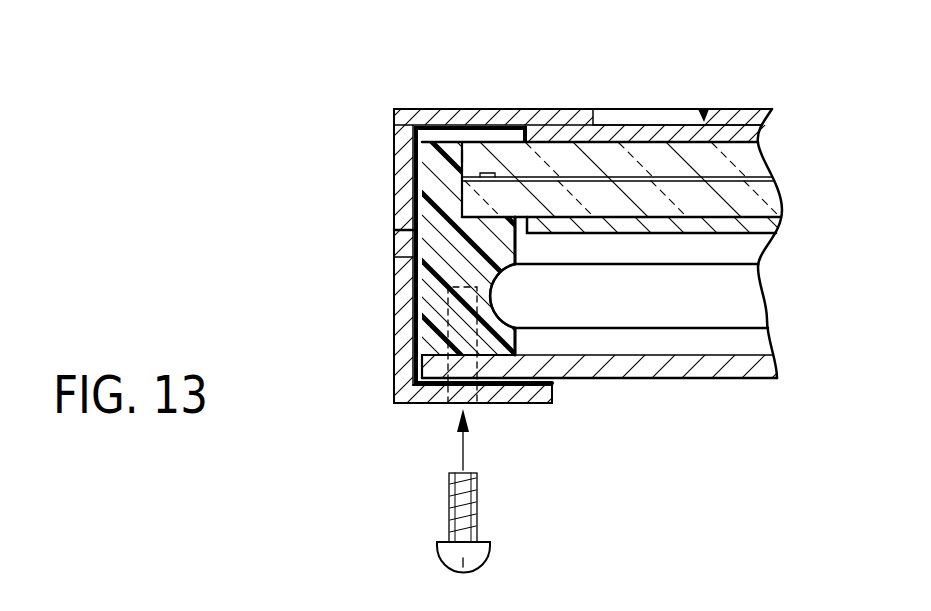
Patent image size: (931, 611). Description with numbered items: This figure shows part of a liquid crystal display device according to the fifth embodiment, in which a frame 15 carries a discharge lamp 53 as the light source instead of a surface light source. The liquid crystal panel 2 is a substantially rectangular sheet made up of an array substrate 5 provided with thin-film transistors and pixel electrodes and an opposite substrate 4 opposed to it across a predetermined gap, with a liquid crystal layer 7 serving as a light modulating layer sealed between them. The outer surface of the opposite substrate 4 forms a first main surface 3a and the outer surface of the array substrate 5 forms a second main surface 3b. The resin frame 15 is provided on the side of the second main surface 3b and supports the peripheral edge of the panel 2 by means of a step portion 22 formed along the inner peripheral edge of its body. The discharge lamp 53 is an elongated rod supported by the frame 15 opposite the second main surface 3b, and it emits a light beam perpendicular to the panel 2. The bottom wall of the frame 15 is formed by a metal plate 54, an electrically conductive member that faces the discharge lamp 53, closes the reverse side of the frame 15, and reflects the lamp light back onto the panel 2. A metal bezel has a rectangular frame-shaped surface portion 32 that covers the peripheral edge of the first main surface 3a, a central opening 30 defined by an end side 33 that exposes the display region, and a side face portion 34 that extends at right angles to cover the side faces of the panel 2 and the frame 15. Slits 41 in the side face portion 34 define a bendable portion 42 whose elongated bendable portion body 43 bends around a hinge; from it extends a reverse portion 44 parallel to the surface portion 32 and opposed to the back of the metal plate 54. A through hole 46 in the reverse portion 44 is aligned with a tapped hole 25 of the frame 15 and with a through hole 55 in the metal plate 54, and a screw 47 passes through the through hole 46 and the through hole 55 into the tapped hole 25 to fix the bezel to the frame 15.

The liquid crystal panel 2 is at (704, 108).
The first main surface 3a is at (744, 108).
The second main surface 3b is at (738, 233).
The opposite substrate 4 is at (756, 152).
The array substrate 5 is at (770, 206).
The liquid crystal layer 7 is at (752, 171).
The frame 15 is at (443, 124).
The step portion 22 is at (466, 157).
The tapped hole 25 is at (433, 341).
The opening 30 is at (650, 108).
The surface portion 32 is at (419, 108).
The end side 33 is at (593, 108).
The side face portion 34 is at (394, 162).
The slit 41 is at (394, 238).
The bendable portion 42 is at (385, 326).
The bendable portion body 43 is at (394, 284).
The reverse portion 44 is at (418, 404).
The through hole 46 is at (453, 405).
The screw 47 is at (483, 559).
The discharge lamp 53 is at (650, 318).
The metal plate 54 is at (706, 375).
The through hole 55 is at (486, 405).